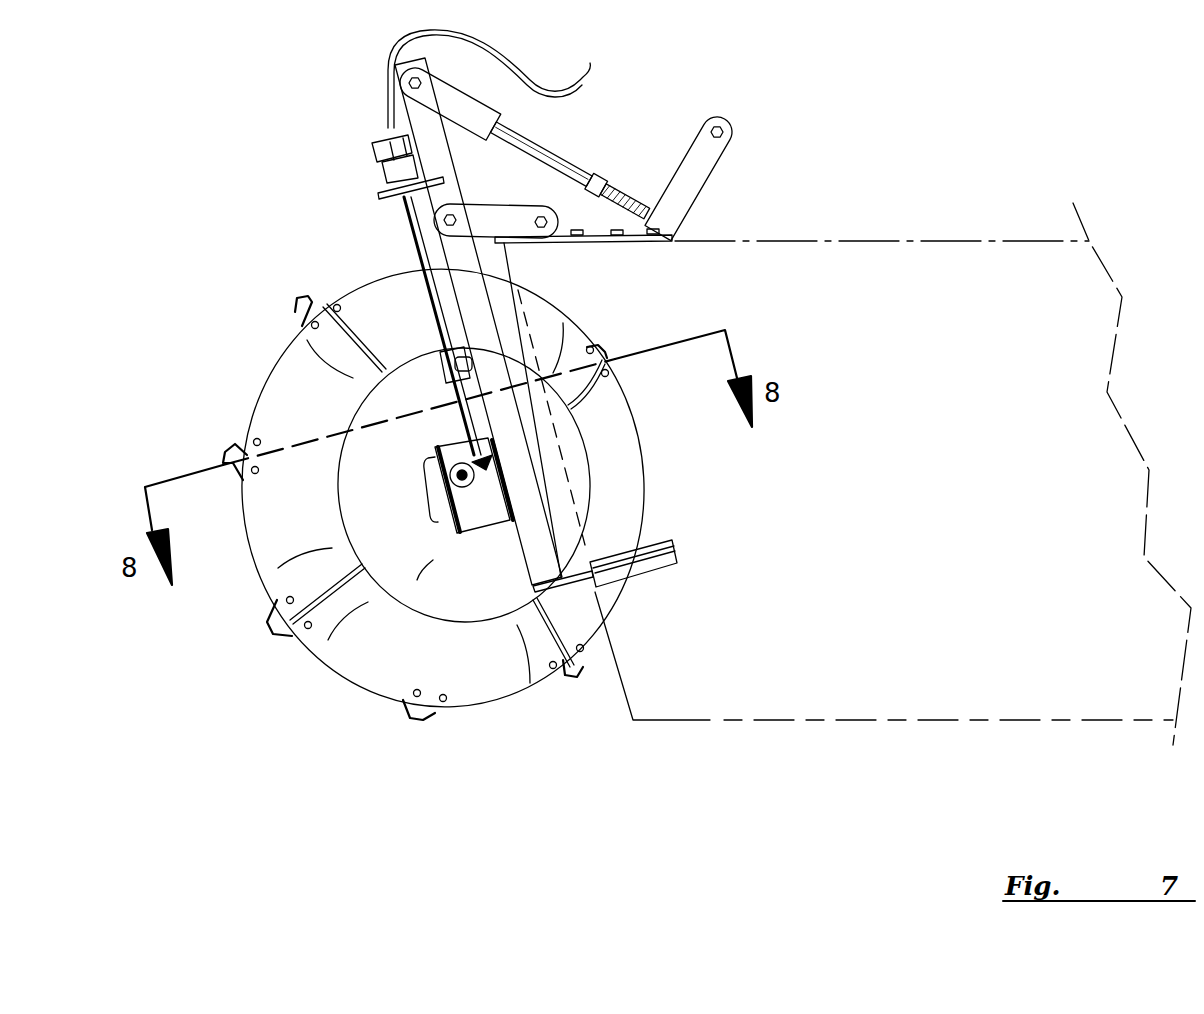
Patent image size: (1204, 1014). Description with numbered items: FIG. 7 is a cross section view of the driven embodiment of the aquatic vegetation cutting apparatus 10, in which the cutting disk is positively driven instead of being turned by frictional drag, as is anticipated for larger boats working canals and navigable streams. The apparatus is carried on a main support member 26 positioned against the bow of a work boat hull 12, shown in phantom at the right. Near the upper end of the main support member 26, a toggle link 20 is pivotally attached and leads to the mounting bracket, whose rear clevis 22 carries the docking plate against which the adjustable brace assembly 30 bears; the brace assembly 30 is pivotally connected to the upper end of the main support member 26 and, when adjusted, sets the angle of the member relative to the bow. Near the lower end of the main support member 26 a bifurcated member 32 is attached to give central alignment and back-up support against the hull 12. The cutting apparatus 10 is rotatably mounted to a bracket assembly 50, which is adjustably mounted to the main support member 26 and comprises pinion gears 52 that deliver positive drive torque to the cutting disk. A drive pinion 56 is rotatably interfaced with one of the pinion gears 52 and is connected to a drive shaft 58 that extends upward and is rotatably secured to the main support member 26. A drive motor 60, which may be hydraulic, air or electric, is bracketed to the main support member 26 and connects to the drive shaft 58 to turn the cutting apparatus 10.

The aquatic vegetation cutting apparatus 10 is at (203, 383).
The boat hull 12 is at (1019, 464).
The toggle link 20 is at (513, 227).
The rear clevis 22 is at (697, 168).
The main support member 26 is at (542, 547).
The adjustable brace assembly 30 is at (605, 92).
The bifurcated member 32 is at (657, 567).
The bracket assembly 50 is at (475, 637).
The pinion gears 52 is at (465, 487).
The drive pinion 56 is at (483, 458).
The drive shaft 58 is at (412, 243).
The drive motor 60 is at (358, 168).